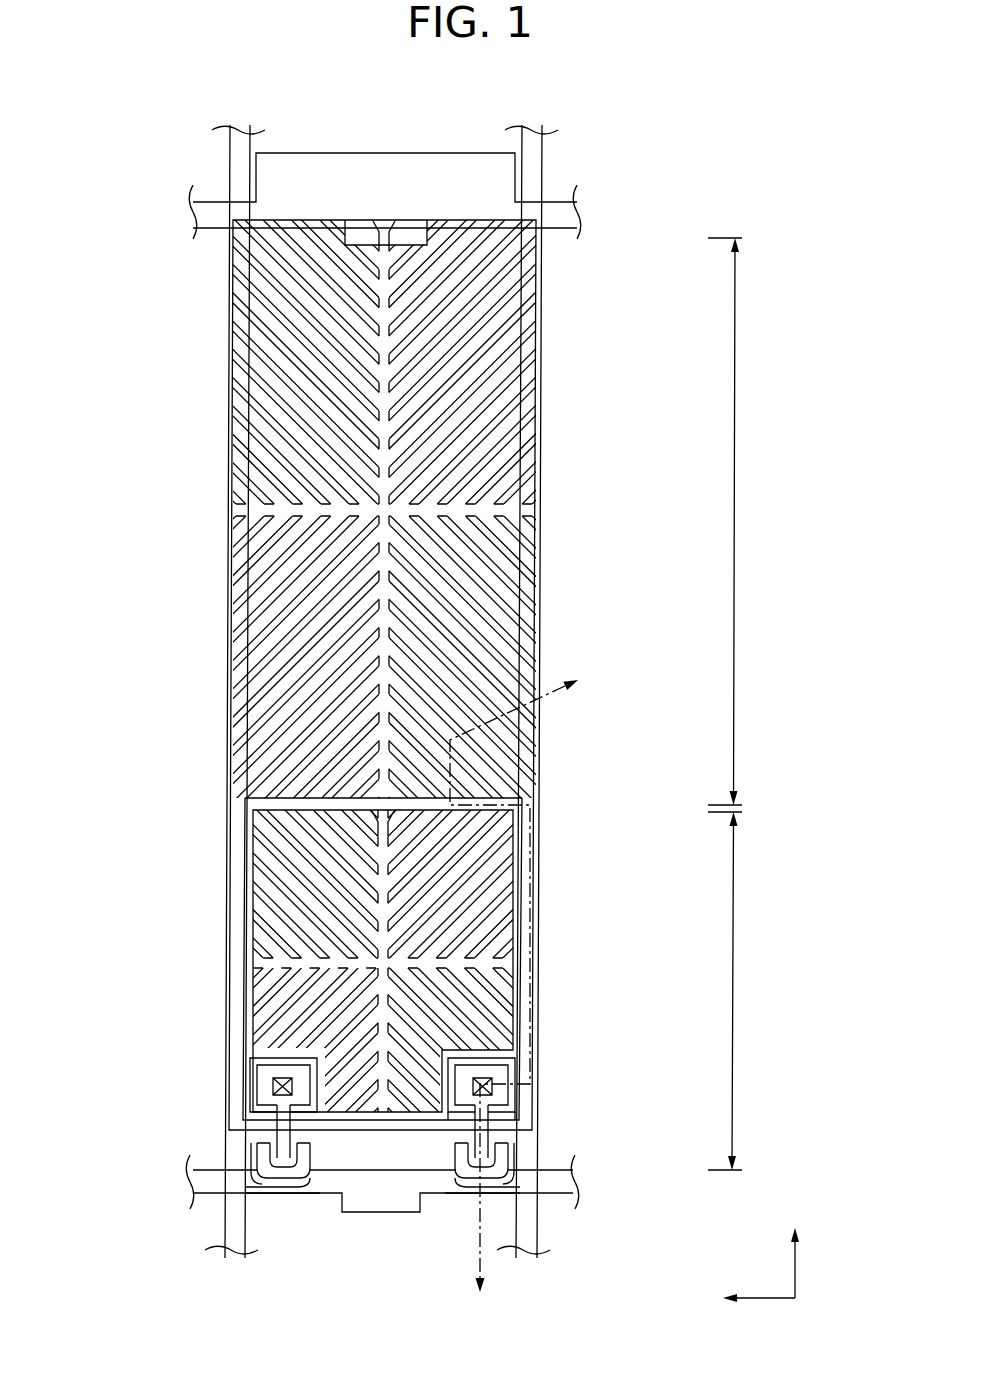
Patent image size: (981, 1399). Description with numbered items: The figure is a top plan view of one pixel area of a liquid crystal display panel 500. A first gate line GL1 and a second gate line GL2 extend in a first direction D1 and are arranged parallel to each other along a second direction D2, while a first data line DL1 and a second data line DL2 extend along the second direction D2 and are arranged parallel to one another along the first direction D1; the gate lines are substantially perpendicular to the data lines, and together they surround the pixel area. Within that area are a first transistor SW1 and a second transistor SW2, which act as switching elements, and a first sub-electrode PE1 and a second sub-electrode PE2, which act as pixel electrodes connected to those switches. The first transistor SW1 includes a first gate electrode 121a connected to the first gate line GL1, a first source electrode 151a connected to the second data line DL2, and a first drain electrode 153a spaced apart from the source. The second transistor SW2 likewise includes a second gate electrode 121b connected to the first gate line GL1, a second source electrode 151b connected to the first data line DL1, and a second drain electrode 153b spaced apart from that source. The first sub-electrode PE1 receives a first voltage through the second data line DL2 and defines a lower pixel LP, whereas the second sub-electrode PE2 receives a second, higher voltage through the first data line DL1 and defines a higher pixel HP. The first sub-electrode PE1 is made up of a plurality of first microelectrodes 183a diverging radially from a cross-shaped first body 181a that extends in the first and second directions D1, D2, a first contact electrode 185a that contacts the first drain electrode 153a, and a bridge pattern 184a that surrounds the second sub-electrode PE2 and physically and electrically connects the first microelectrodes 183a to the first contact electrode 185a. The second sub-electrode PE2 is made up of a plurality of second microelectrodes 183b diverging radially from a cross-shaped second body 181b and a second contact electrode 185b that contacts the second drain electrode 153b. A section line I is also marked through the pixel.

The LCD panel 500 is at (397, 89).
The first gate line GL1 is at (577, 1183).
The second gate line GL2 is at (578, 222).
The first data line DL1 is at (222, 1229).
The second data line DL2 is at (536, 1233).
The first sub-electrode PE1 is at (408, 689).
The second sub-electrode PE2 is at (365, 984).
The first body 181a is at (387, 370).
The first microelectrodes 183a is at (539, 316).
The bridge pattern 184a is at (530, 990).
The first contact electrode 185a is at (512, 1080).
The second body 181b is at (258, 960).
The second microelectrodes 183b is at (253, 917).
The second contact electrode 185b is at (252, 1068).
The first transistor SW1 is at (571, 1135).
The second transistor SW2 is at (198, 1135).
The first drain electrode 153a is at (490, 1141).
The first gate electrode 121a is at (512, 1158).
The first source electrode 151a is at (518, 1170).
The second drain electrode 153b is at (275, 1141).
The second gate electrode 121b is at (262, 1158).
The second source electrode 151b is at (250, 1168).
The lower pixel LP is at (736, 521).
The higher pixel HP is at (737, 991).
The first direction D1 is at (743, 1298).
The second direction D2 is at (795, 1250).
The section line I-I' I is at (523, 995).